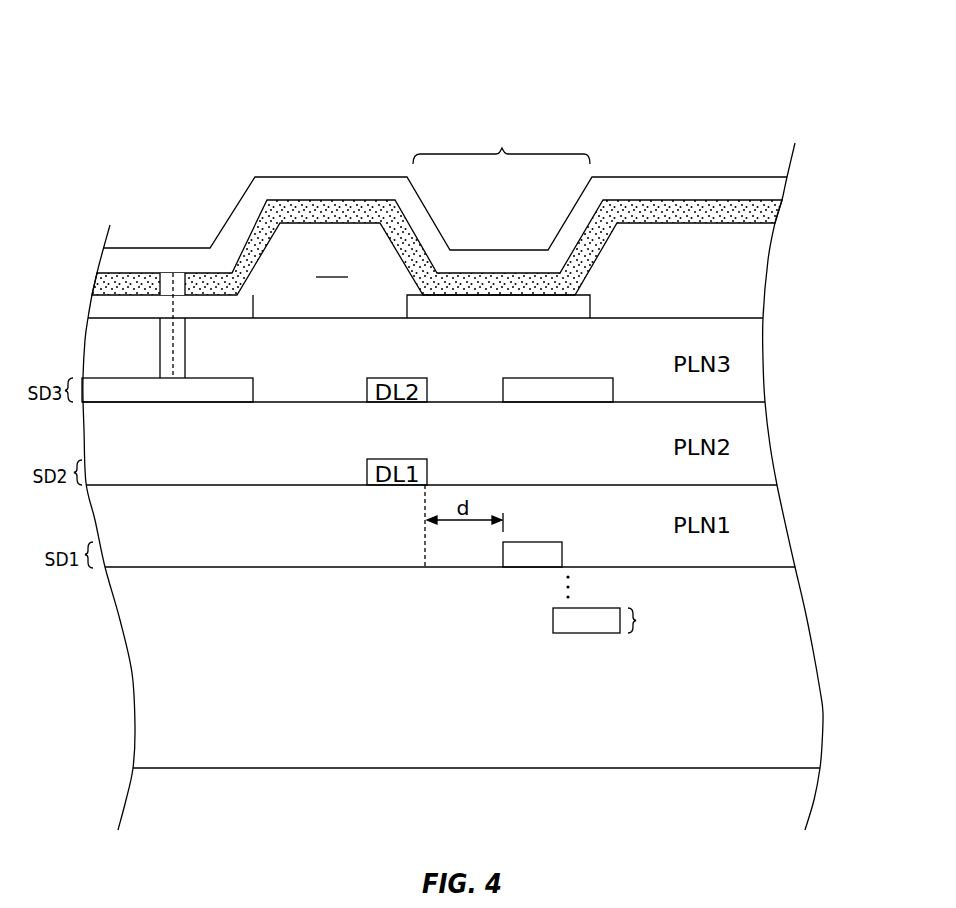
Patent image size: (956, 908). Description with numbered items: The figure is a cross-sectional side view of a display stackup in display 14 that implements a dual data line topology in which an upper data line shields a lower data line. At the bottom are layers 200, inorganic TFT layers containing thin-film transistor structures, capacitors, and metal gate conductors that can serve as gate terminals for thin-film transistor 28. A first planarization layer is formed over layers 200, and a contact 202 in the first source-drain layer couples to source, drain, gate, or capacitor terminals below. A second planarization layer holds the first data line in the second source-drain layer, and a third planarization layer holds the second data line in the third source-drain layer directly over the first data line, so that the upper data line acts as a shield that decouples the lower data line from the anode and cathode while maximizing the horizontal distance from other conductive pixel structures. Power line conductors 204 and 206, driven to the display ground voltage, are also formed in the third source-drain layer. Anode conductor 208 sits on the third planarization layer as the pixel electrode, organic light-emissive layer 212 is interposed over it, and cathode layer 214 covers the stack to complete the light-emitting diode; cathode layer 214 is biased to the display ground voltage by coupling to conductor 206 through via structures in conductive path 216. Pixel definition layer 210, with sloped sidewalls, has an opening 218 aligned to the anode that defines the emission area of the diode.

The display 14 is at (688, 78).
The thin-film transistor 28 is at (606, 622).
The layers 200 is at (128, 675).
The contact 202 is at (545, 540).
The power line conductor 204 is at (598, 376).
The power line conductor 206 is at (255, 387).
The anode conductor 208 is at (580, 303).
The pixel definition layer 210 is at (752, 275).
The organic light-emissive layer 212 is at (775, 212).
The cathode layer 214 is at (768, 185).
The conductive path 216 is at (173, 308).
The opening 218 is at (501, 142).